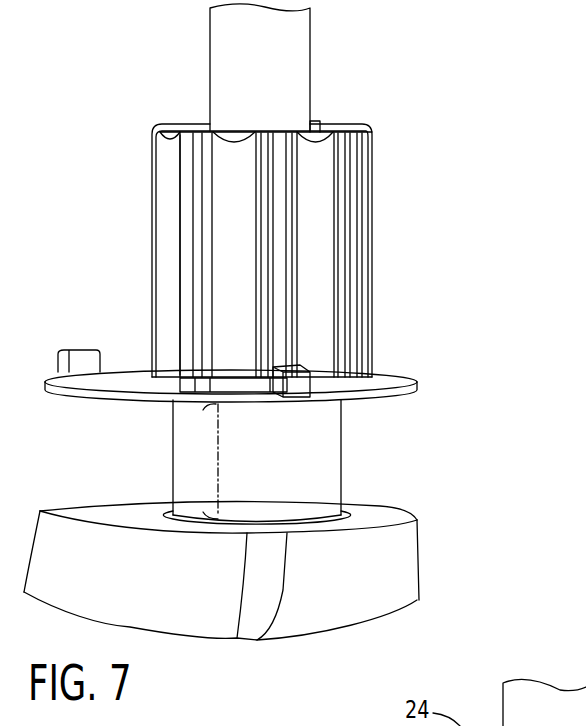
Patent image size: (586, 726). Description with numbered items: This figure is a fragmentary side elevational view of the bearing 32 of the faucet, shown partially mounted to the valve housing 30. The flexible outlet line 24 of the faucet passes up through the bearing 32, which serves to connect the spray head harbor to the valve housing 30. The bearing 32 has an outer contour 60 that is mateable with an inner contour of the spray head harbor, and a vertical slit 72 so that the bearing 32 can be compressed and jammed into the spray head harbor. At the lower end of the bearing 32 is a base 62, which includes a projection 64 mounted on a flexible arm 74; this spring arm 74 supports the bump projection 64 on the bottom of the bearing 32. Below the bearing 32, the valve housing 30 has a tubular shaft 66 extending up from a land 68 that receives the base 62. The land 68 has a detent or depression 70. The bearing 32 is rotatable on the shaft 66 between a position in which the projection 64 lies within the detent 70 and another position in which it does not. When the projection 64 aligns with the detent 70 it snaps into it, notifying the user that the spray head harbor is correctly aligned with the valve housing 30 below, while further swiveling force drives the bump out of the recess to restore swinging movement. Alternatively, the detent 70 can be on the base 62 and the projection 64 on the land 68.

The flexible outlet line 24 is at (222, 80).
The valve housing 30 is at (412, 573).
The bearing 32 is at (367, 268).
The outer contour 60 is at (181, 248).
The base 62 is at (400, 373).
The projection 64 is at (205, 405).
The shaft 66 is at (360, 481).
The land 68 is at (392, 511).
The detent 70 is at (212, 518).
The vertical slit 72 is at (322, 127).
The flexible arm 74 is at (181, 377).